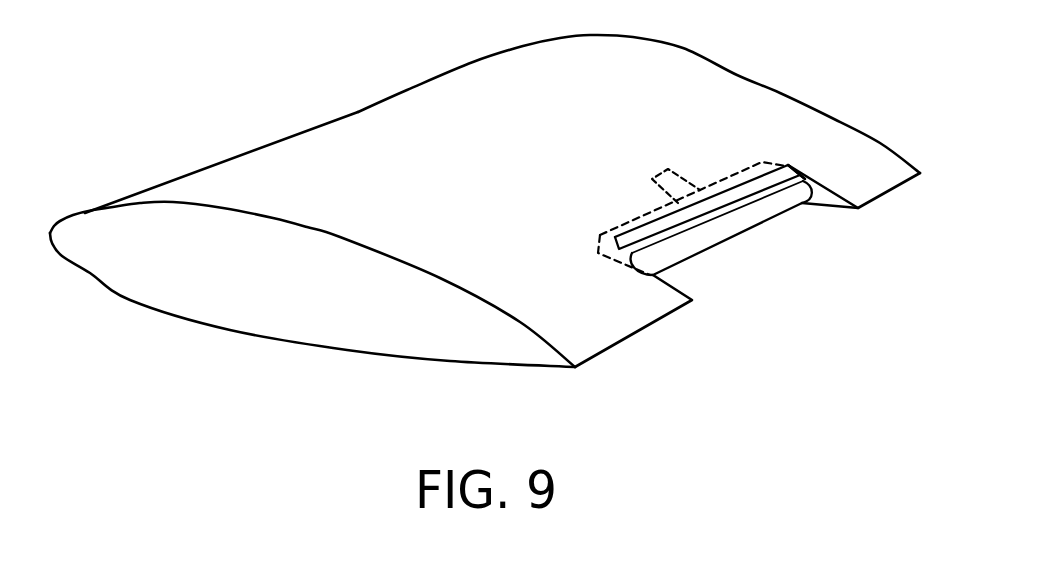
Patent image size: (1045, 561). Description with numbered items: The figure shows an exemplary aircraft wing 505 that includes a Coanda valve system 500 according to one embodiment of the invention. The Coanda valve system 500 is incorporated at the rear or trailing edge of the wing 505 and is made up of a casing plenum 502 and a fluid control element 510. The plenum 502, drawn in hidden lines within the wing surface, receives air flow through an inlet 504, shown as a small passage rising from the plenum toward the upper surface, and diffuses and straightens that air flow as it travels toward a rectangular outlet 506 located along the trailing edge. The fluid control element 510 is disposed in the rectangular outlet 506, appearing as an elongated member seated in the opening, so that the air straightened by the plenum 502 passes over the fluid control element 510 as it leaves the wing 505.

The Coanda valve system 500 is at (721, 257).
The casing plenum 502 is at (620, 216).
The inlet 504 is at (660, 176).
The aircraft wing 505 is at (358, 112).
The rectangular outlet 506 is at (812, 178).
The fluid control element 510 is at (755, 217).